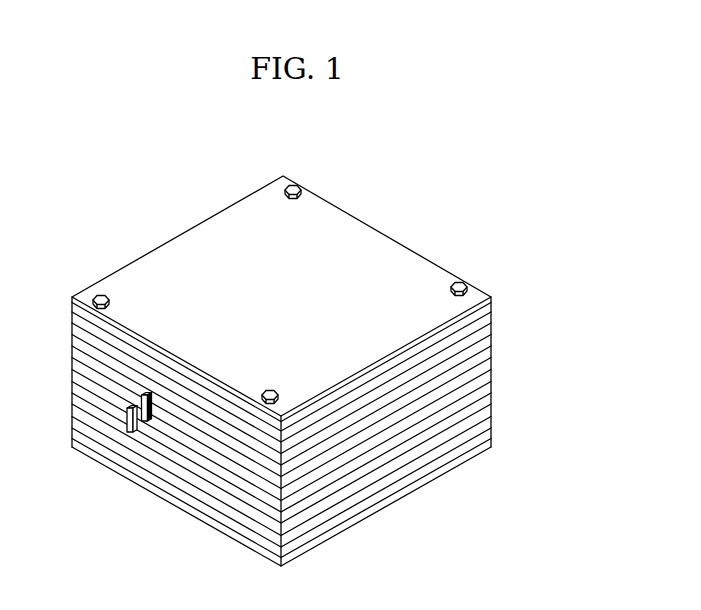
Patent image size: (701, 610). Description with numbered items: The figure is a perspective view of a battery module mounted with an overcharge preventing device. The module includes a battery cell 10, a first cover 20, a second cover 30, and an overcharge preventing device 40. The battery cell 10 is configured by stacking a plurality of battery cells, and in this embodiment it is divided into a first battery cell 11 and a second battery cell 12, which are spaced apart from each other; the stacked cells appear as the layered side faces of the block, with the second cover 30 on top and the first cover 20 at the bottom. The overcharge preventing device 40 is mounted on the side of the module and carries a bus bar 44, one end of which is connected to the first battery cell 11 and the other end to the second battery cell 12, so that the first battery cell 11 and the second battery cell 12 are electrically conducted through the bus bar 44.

The battery cell 10 is at (533, 325).
The first battery cell 11 is at (493, 383).
The second battery cell 12 is at (493, 301).
The first cover 20 is at (410, 494).
The second cover 30 is at (358, 252).
The overcharge preventing device 40 is at (217, 450).
The bus bar 44 is at (128, 425).